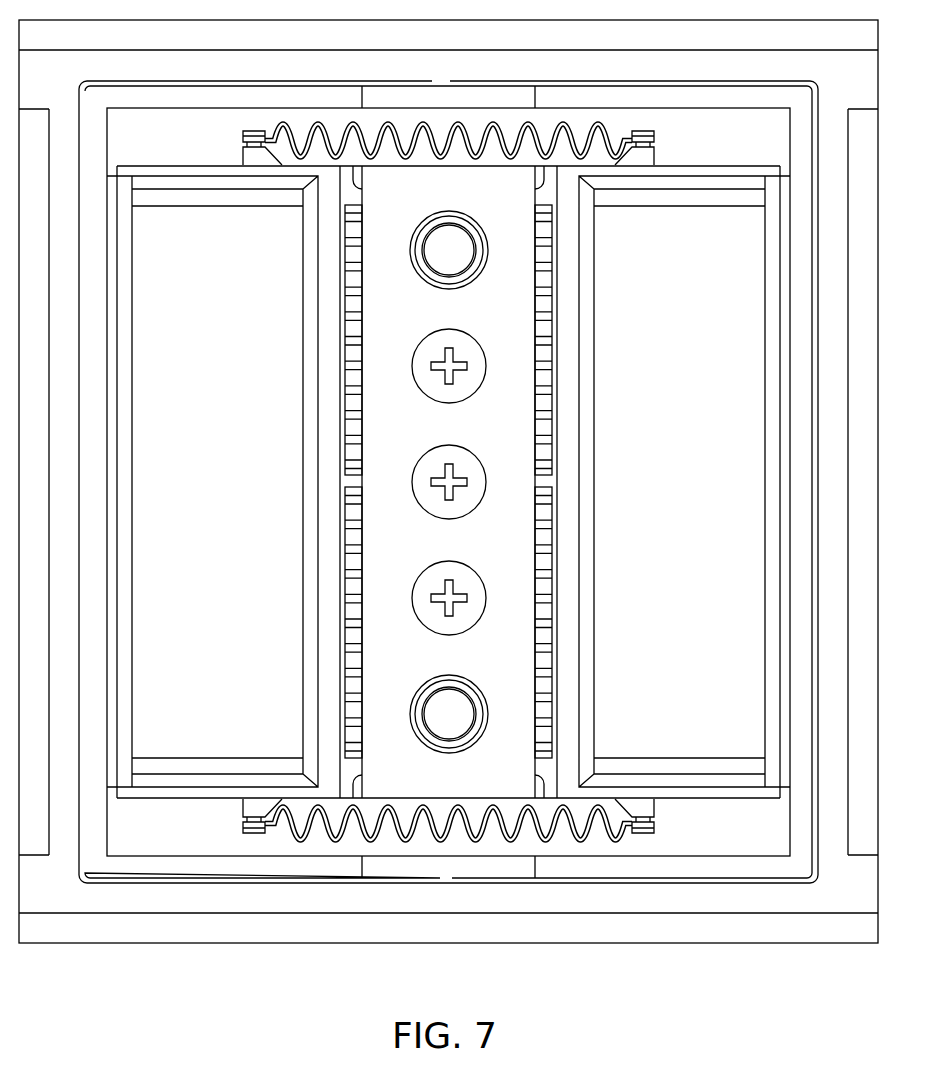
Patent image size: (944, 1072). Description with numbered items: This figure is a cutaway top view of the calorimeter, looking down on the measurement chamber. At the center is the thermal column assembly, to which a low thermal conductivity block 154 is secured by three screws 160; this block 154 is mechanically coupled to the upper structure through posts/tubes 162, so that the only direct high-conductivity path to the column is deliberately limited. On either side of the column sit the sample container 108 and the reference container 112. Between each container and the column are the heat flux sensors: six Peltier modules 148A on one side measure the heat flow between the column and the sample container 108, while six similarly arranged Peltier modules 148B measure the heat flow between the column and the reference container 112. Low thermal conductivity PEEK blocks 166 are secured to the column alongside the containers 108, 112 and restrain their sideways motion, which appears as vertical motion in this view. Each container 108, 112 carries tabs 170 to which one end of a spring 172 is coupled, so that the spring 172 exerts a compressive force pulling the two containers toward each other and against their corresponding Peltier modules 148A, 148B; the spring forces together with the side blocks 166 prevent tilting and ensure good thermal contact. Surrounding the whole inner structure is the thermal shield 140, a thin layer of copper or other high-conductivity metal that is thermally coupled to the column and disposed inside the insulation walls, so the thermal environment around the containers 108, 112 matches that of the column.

The sample container 108 is at (238, 481).
The reference container 112 is at (691, 481).
The thermal shield 140 is at (317, 81).
The Peltier modules 148A is at (340, 303).
The Peltier modules 148B is at (557, 312).
The low thermal conductivity block 154 is at (468, 790).
The screws 160 is at (420, 345).
The posts/tubes 162 is at (418, 232).
The low thermal conductivity blocks 166 is at (407, 126).
The tabs 170 is at (244, 143).
The spring 172 is at (599, 122).